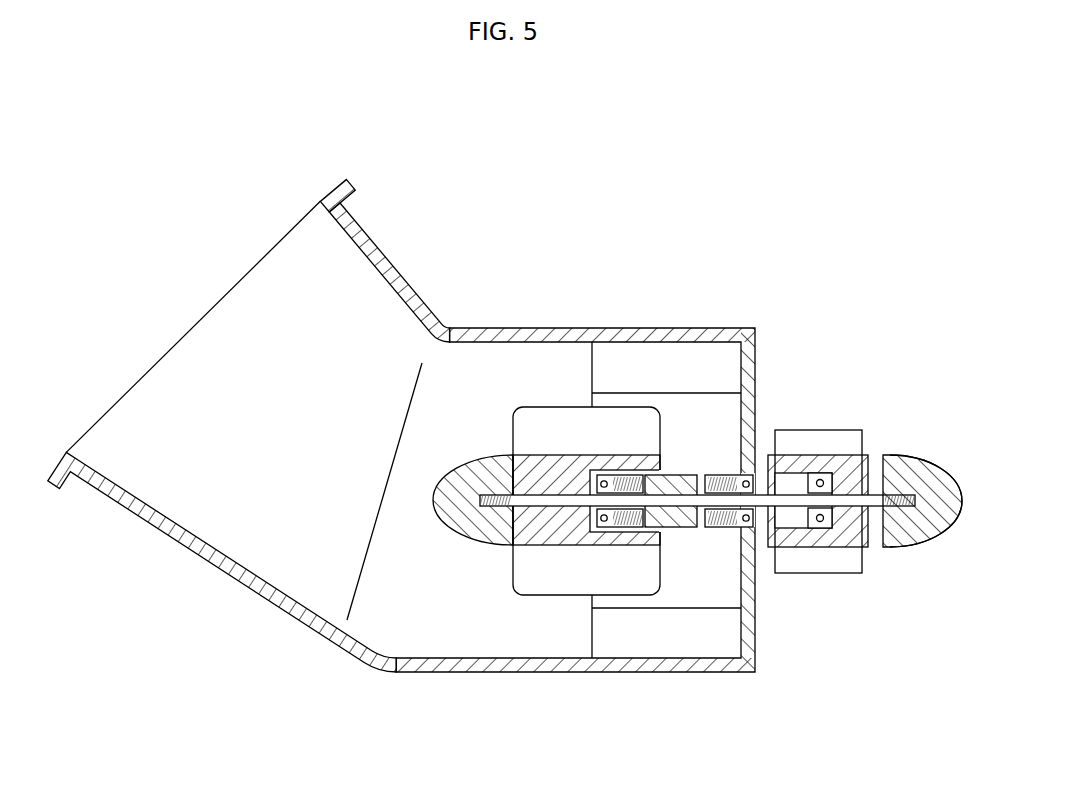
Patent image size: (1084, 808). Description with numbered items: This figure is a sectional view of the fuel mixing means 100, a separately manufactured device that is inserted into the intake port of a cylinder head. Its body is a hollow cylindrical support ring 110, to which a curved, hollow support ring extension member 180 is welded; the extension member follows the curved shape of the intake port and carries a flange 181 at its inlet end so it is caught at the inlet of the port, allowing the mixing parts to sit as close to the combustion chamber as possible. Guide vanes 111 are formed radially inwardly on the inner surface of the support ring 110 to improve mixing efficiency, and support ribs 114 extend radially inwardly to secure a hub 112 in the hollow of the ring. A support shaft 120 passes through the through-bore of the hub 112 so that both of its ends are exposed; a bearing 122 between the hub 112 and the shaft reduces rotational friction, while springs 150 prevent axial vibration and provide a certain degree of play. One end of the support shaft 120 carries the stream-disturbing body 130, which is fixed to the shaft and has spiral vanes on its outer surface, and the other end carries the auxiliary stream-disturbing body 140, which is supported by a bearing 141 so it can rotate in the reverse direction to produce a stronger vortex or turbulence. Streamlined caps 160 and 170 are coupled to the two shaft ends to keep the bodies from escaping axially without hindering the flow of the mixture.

The fuel mixing means 100 is at (521, 171).
The support ring 110 is at (693, 328).
The guide vanes 111 is at (657, 353).
The hub 112 is at (700, 473).
The support ribs 114 is at (750, 353).
The support shaft 120 is at (905, 470).
The bearing 122 is at (757, 524).
The stream-disturbing body 130 is at (550, 413).
The auxiliary stream-disturbing body 140 is at (826, 458).
The bearing 141 is at (828, 548).
The springs 150 is at (718, 473).
The cap 160 is at (478, 547).
The cap 170 is at (937, 547).
The support ring extension member 180 is at (235, 600).
The flange 181 is at (334, 185).